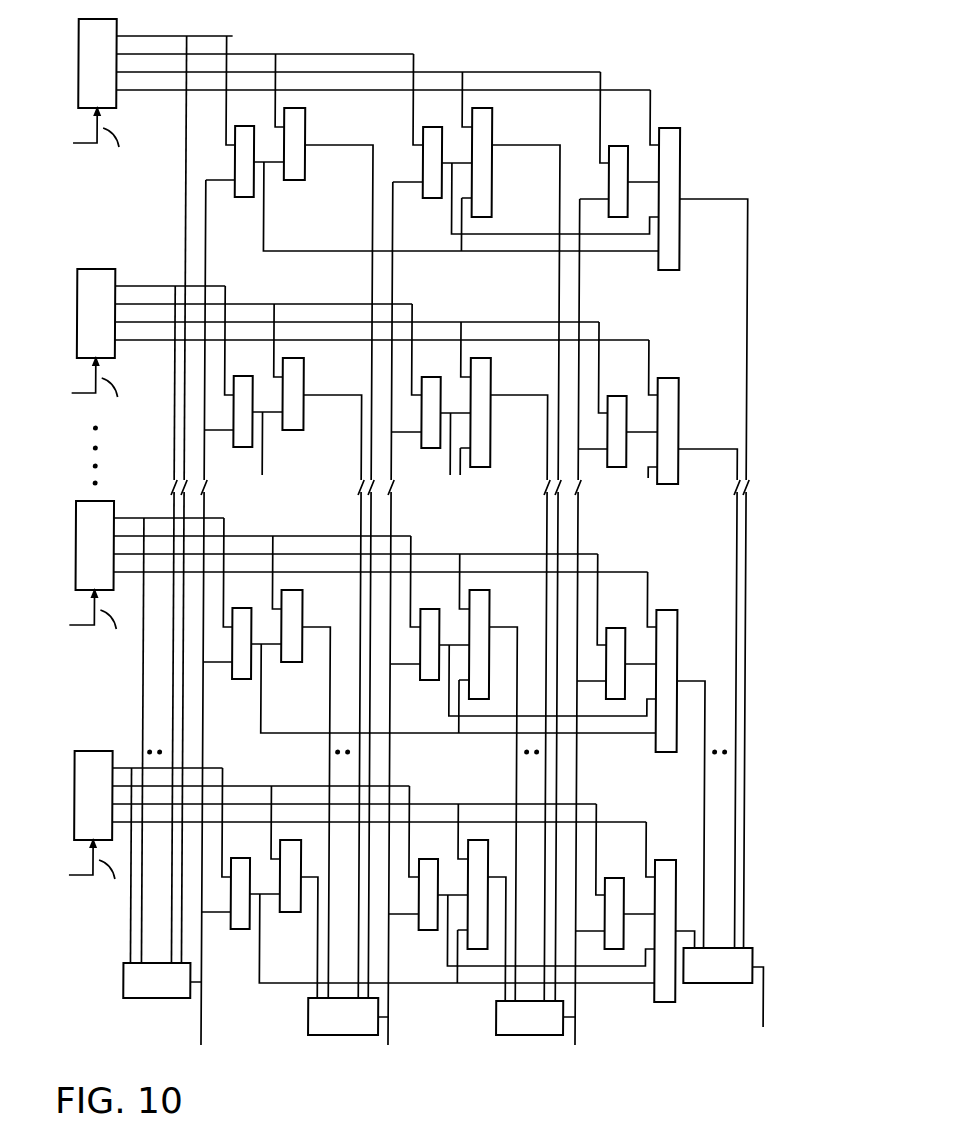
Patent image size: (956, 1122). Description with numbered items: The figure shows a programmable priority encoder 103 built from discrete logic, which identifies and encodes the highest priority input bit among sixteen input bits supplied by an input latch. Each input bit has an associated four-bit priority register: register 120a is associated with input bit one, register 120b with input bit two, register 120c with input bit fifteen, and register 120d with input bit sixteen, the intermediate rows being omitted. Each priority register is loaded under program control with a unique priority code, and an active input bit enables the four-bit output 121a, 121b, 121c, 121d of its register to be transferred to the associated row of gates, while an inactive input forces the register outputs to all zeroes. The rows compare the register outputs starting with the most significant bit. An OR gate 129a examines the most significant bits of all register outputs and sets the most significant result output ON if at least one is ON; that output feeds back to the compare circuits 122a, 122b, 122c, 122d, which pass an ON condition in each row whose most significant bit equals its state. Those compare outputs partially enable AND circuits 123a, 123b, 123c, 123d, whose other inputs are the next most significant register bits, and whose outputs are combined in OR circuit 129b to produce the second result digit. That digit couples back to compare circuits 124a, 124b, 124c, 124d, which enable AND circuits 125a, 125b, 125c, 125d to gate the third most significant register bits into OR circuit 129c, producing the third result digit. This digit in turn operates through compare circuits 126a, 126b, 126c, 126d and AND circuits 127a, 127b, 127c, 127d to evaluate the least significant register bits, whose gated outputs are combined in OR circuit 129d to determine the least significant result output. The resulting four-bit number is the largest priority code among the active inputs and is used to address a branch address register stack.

The programmable priority encoder 103 is at (698, 31).
The priority register 120a is at (115, 27).
The priority register 120b is at (115, 339).
The priority register 120c is at (112, 573).
The priority register 120d is at (103, 813).
The four-bit output 121a is at (385, 496).
The four-bit output 121b is at (384, 621).
The four-bit output 121c is at (384, 737).
The four-bit output 121d is at (383, 862).
The compare circuit 122a is at (240, 198).
The compare circuit 122b is at (243, 425).
The compare circuit 122c is at (430, 670).
The compare circuit 122d is at (428, 920).
The AND circuit 123a is at (300, 180).
The AND circuit 123b is at (318, 678).
The AND circuit 123c is at (302, 794).
The AND circuit 123d is at (296, 919).
The compare circuit 124a is at (434, 190).
The compare circuit 124b is at (524, 427).
The compare circuit 124c is at (523, 662).
The compare circuit 124d is at (521, 912).
The AND circuit 125a is at (488, 213).
The AND circuit 125b is at (502, 679).
The AND circuit 125c is at (494, 795).
The AND circuit 125d is at (481, 920).
The compare circuit 126a is at (623, 156).
The compare circuit 126b is at (618, 418).
The compare circuit 126c is at (617, 650).
The compare circuit 126d is at (616, 900).
The AND circuit 127a is at (682, 157).
The AND circuit 127b is at (696, 659).
The AND circuit 127c is at (686, 775).
The AND circuit 127d is at (676, 919).
The OR gate 129a is at (124, 995).
The OR circuit 129b is at (312, 1029).
The OR circuit 129c is at (500, 1029).
The OR circuit 129d is at (737, 984).